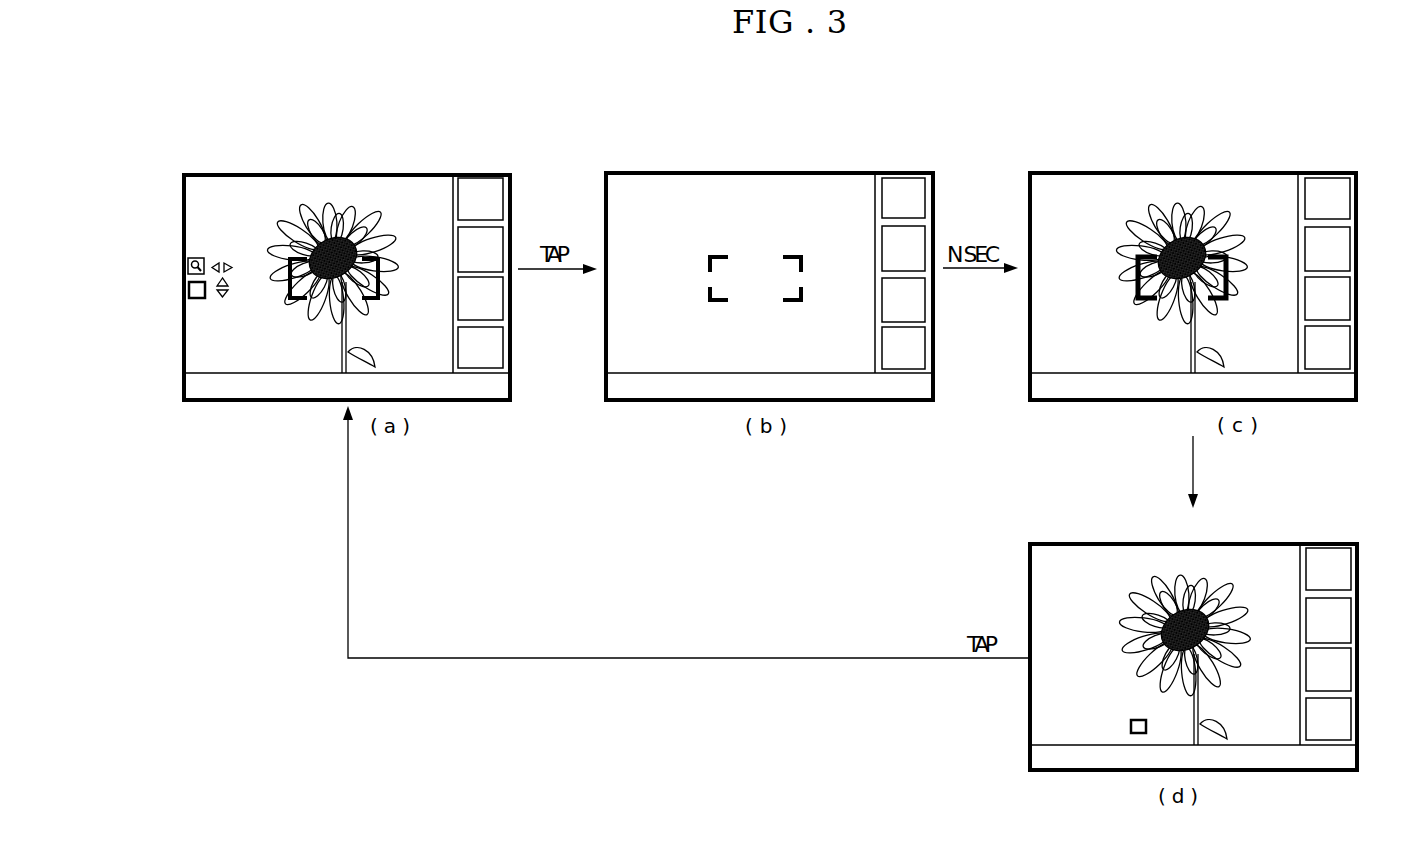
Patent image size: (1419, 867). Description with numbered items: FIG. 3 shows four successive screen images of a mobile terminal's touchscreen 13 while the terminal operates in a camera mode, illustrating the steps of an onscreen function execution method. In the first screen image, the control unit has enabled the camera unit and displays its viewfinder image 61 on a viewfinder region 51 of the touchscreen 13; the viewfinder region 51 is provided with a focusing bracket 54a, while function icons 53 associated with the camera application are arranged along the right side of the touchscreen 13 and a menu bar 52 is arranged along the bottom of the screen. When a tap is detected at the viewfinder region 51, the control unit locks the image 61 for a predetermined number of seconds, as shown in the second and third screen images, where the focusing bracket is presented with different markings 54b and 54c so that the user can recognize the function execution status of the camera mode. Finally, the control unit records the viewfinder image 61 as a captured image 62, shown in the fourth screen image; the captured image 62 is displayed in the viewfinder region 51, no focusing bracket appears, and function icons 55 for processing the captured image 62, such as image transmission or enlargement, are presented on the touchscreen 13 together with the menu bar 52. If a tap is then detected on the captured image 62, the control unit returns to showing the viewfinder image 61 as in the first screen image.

The touchscreen 13 is at (522, 149).
The viewfinder region 51 is at (226, 235).
The menu bar 52 is at (443, 392).
The function icons 53 is at (488, 352).
The focusing bracket 54a is at (292, 262).
The focusing bracket 54b is at (713, 250).
The focusing bracket 54c is at (1134, 250).
The function icons 55 is at (1128, 733).
The viewfinder image 61 is at (247, 310).
The captured image 62 is at (1052, 687).